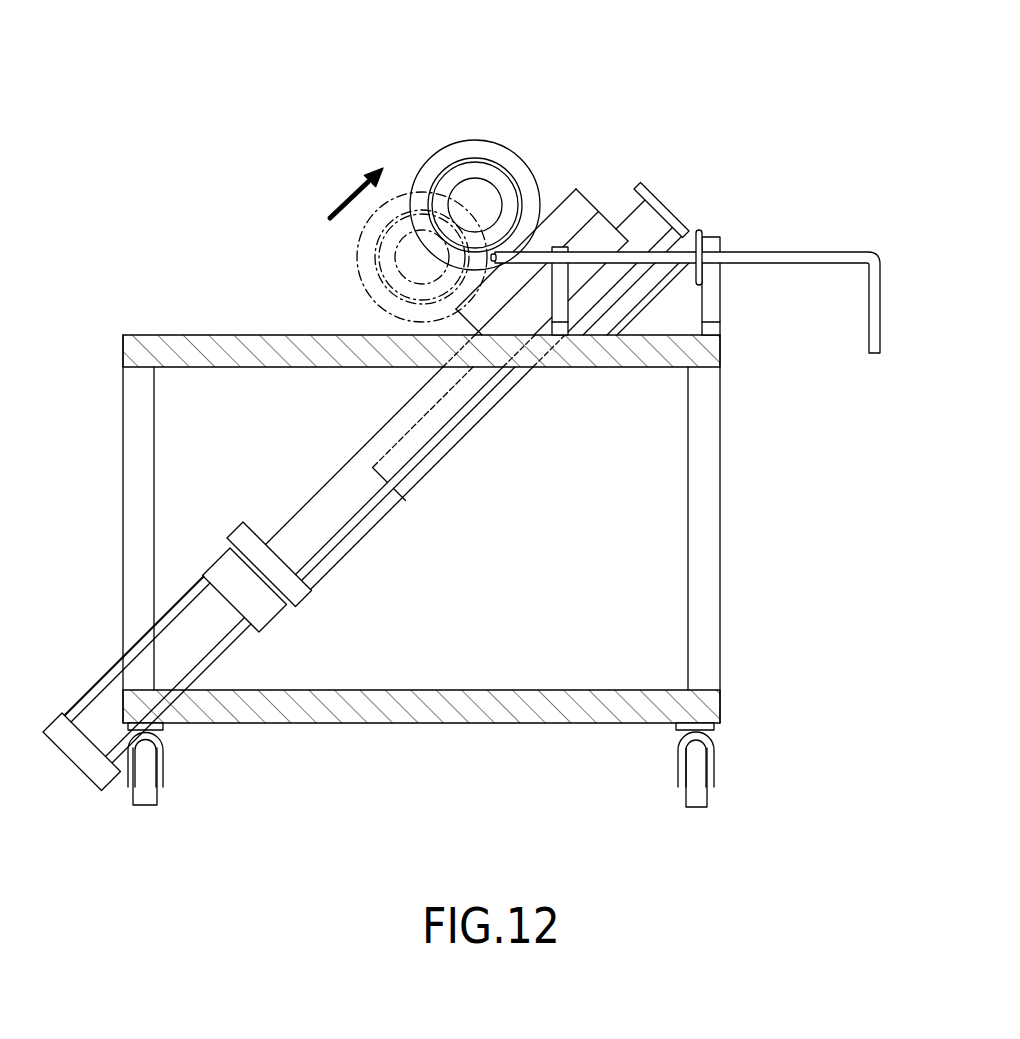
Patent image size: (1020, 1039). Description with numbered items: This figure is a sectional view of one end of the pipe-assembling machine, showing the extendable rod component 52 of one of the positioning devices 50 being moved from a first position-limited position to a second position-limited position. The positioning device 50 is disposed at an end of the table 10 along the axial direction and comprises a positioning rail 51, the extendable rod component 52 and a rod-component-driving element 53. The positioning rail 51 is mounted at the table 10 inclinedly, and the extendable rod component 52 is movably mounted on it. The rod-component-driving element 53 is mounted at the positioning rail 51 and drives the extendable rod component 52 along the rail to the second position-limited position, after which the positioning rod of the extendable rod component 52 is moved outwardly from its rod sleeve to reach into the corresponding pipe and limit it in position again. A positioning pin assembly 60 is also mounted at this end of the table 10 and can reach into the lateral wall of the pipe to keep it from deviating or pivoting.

The table 10 is at (245, 340).
The positioning device 50 is at (622, 170).
The positioning rail 51 is at (442, 442).
The extendable rod component 52 is at (477, 132).
The rod-component-driving element 53 is at (205, 638).
The positioning pin assembly 60 is at (755, 242).